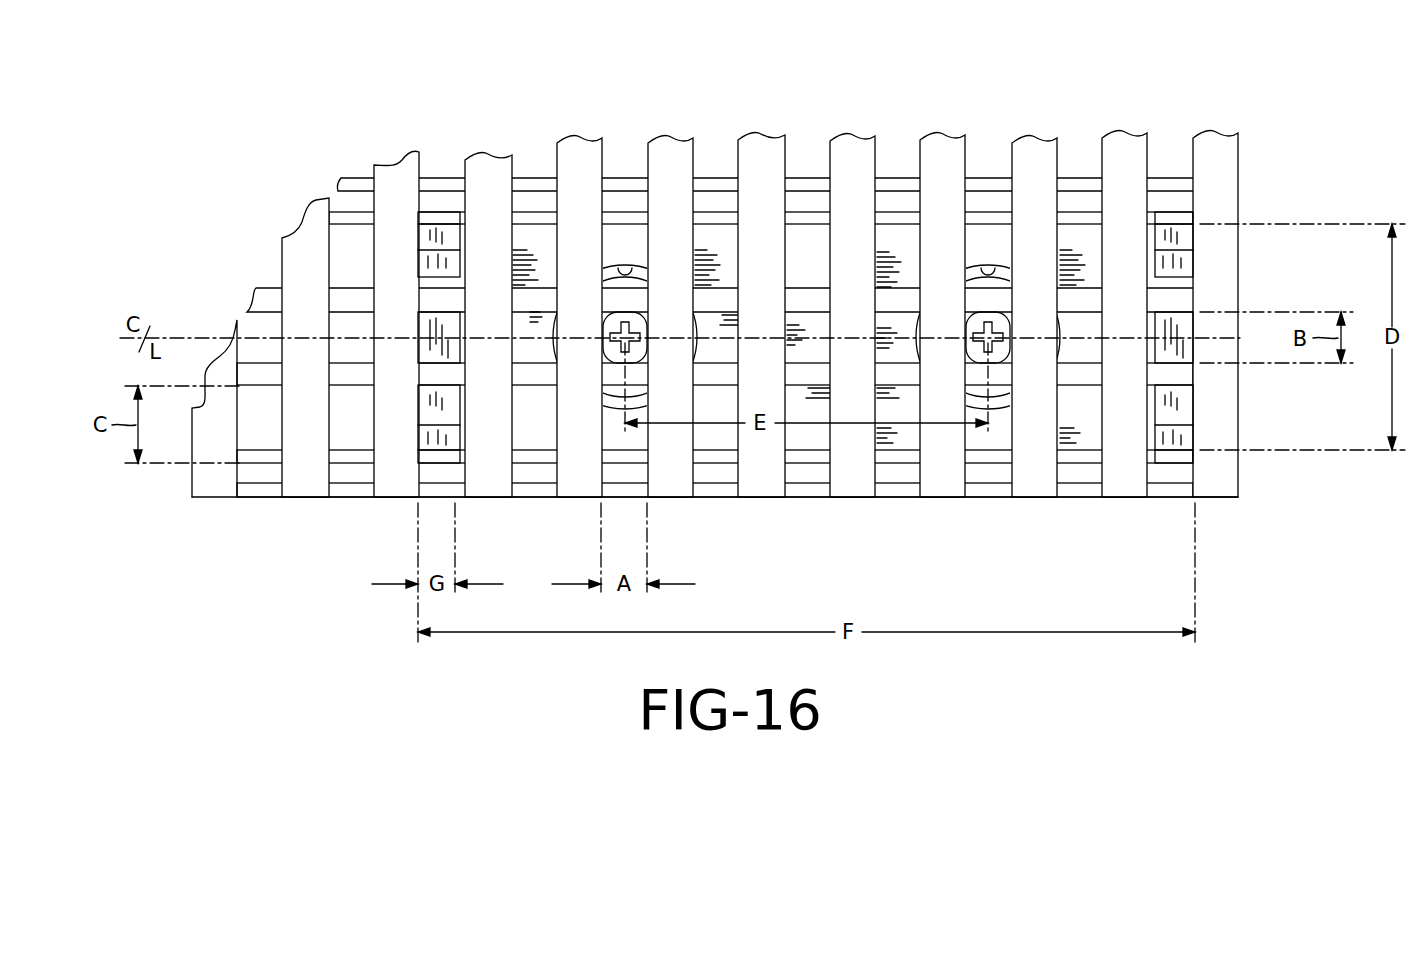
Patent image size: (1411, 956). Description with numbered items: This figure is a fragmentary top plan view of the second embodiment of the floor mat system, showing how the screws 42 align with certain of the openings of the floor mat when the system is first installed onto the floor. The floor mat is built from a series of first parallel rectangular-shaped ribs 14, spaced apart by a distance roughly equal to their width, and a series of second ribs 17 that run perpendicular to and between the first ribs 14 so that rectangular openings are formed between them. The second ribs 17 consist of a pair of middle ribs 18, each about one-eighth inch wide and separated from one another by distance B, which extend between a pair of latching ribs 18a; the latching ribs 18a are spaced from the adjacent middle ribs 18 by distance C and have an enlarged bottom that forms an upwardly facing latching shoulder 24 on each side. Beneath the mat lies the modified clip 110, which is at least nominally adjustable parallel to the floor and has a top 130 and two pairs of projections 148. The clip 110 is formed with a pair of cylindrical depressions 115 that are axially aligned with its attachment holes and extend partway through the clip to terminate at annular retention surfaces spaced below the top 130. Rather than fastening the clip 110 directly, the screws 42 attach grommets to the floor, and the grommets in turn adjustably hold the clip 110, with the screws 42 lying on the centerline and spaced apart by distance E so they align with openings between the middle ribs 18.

The first ribs 14 is at (1215, 152).
The second ribs 17 is at (723, 190).
The middle ribs 18 is at (1185, 300).
The latching ribs 18a is at (1086, 195).
The latching shoulder 24 is at (900, 192).
The screws 42 is at (612, 356).
The clip 110 is at (896, 446).
The cylindrical depressions 115 is at (628, 268).
The top 130 is at (813, 240).
The projections 148 is at (445, 240).